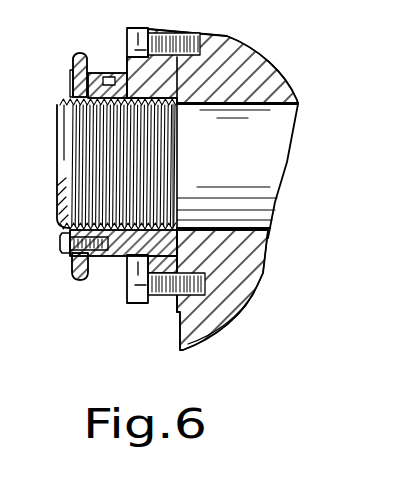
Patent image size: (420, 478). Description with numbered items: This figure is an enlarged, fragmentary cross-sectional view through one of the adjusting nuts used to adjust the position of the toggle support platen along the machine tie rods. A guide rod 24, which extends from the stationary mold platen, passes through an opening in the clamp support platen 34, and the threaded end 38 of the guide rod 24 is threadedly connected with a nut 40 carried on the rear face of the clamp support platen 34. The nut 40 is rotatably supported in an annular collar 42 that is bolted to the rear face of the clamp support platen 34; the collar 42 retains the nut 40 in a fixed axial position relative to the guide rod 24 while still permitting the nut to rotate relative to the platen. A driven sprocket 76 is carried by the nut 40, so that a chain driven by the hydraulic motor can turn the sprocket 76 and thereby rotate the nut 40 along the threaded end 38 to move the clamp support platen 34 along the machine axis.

The guide rod 24 is at (276, 174).
The clamp support platen 34 is at (242, 48).
The threaded end 38 is at (90, 105).
The nut 40 is at (117, 258).
The annular collar 42 is at (167, 303).
The driven sprocket 76 is at (78, 62).